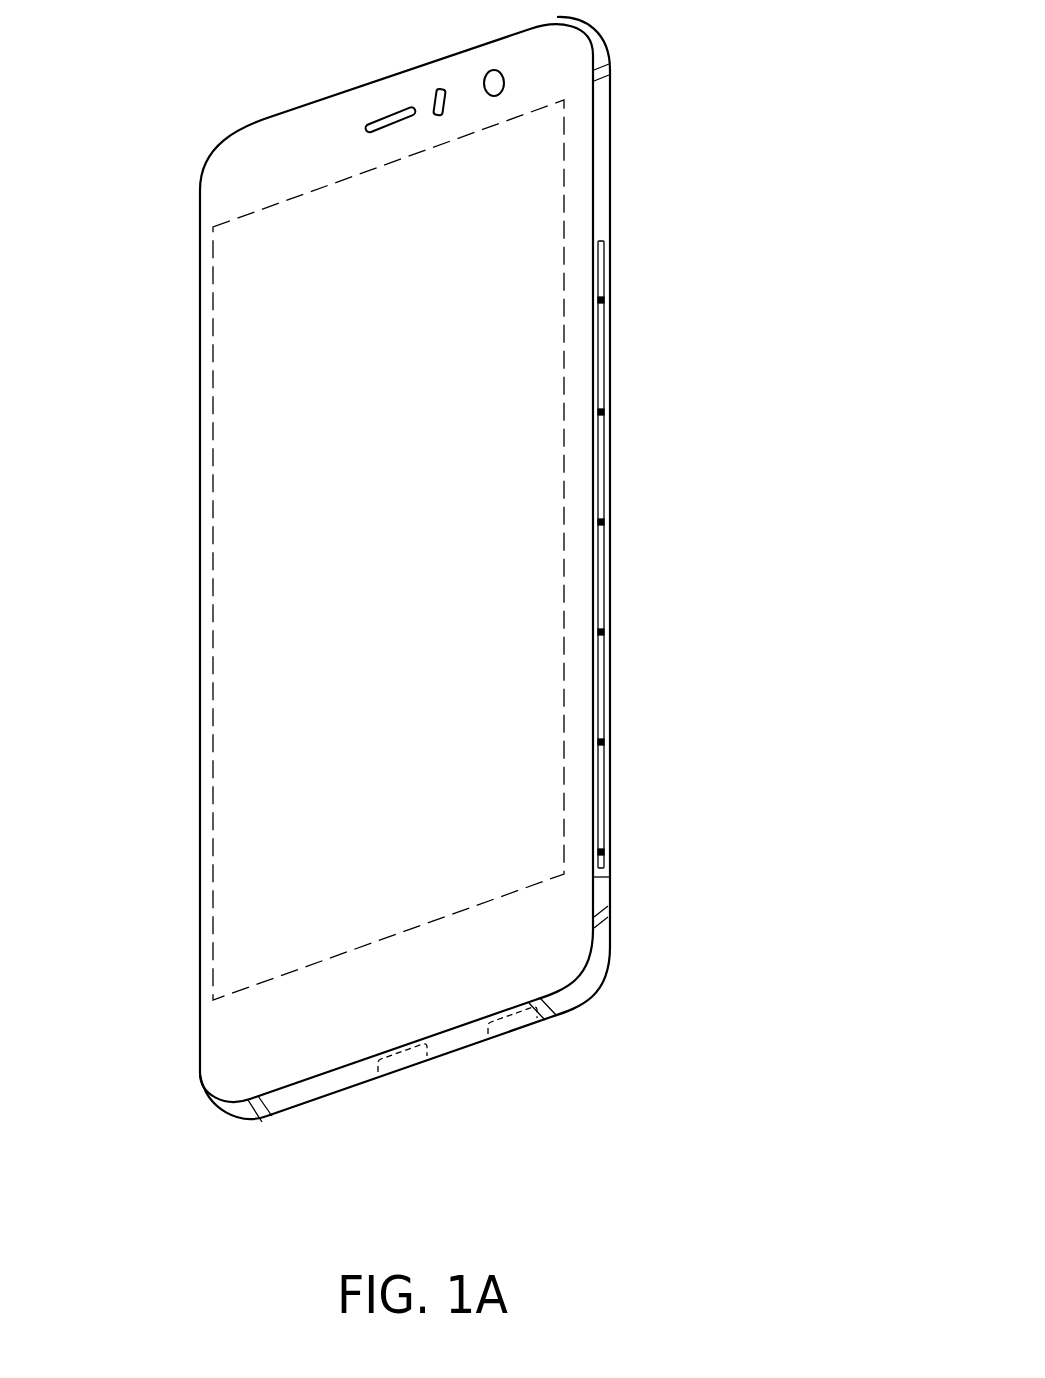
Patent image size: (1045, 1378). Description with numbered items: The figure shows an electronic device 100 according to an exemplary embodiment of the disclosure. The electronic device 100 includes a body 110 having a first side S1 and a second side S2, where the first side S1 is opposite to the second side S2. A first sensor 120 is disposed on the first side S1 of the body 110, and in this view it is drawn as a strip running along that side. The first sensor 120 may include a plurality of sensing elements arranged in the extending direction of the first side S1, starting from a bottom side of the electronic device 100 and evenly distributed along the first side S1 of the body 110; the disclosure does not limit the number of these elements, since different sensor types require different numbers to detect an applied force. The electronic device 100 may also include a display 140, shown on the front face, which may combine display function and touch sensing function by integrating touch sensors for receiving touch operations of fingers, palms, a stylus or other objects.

The electronic device 100 is at (815, 1148).
The body 110 is at (566, 42).
The first sensor 120 is at (604, 370).
The display 140 is at (547, 155).
The first side S1 is at (614, 214).
The second side S2 is at (178, 340).